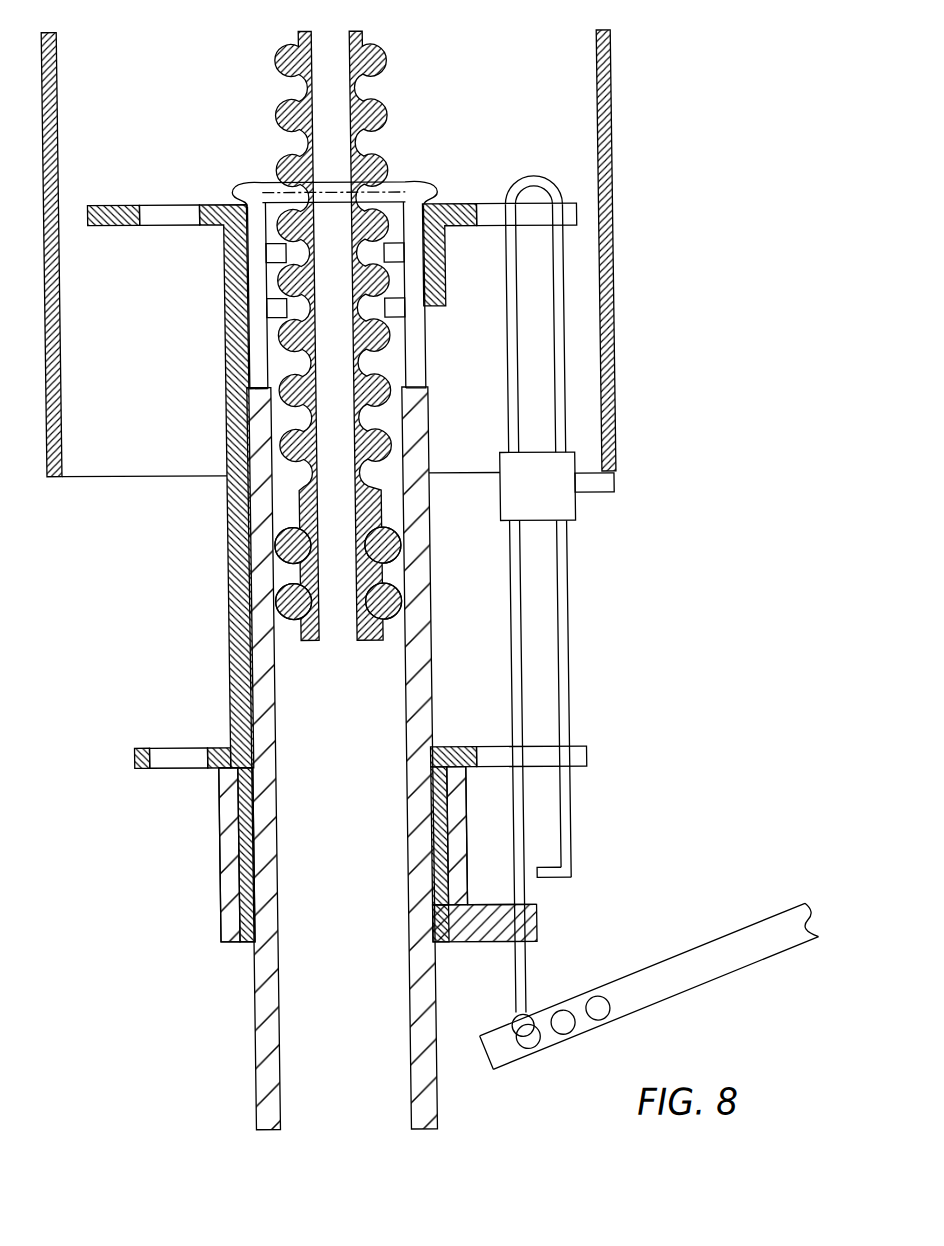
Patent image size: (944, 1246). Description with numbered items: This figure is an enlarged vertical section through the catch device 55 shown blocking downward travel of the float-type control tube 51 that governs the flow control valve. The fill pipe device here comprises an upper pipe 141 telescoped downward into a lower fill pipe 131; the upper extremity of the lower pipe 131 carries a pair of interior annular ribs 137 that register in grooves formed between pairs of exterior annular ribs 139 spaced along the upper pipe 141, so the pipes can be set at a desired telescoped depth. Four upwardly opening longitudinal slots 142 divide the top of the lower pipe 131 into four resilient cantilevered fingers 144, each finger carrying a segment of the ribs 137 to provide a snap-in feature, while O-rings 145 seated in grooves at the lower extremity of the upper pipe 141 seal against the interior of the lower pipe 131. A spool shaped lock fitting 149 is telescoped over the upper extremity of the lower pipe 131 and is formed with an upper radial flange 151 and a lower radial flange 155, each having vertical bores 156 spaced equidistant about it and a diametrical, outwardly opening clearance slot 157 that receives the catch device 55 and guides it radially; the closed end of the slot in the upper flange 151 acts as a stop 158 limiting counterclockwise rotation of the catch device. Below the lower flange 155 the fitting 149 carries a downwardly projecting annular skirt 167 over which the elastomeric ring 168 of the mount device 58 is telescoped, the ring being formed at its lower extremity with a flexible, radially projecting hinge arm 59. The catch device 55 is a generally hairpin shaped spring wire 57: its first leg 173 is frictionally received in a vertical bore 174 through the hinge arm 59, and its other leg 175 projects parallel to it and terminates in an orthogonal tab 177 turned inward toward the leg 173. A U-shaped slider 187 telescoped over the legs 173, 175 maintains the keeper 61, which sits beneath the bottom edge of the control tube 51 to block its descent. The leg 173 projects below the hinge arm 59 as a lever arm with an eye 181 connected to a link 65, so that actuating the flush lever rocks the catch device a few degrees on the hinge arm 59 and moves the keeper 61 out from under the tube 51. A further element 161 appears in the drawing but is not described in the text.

The control tube 51 is at (665, 342).
The catch device 55 is at (585, 623).
The spring wire 57 is at (567, 705).
The mount device 58 is at (203, 914).
The hinge arm 59 is at (488, 942).
The keeper 61 is at (588, 490).
The link 65 is at (705, 941).
The lower fill pipe 131 is at (248, 1081).
The interior annular ribs 137 is at (379, 238).
The annular ribs 139 is at (394, 56).
The upper pipe 141 is at (260, 111).
The longitudinal slots 142 is at (251, 301).
The cantilevered fingers 144 is at (251, 184).
The O-rings 145 is at (281, 548).
The lock fitting 149 is at (190, 509).
The upper radial flange 151 is at (116, 204).
The lower radial flange 155 is at (136, 769).
The vertical bores 156 is at (151, 224).
The clearance slots 157 is at (575, 204).
The stop 158 is at (480, 227).
The lower bar 161 is at (578, 758).
The annular skirt 167 is at (240, 797).
The elastomeric ring 168 is at (216, 871).
The leg 173 is at (506, 574).
The vertical bore 174 is at (506, 905).
The other leg 175 is at (567, 577).
The orthogonal tab 177 is at (544, 880).
The eye 181 is at (524, 1014).
The slider 187 is at (537, 453).